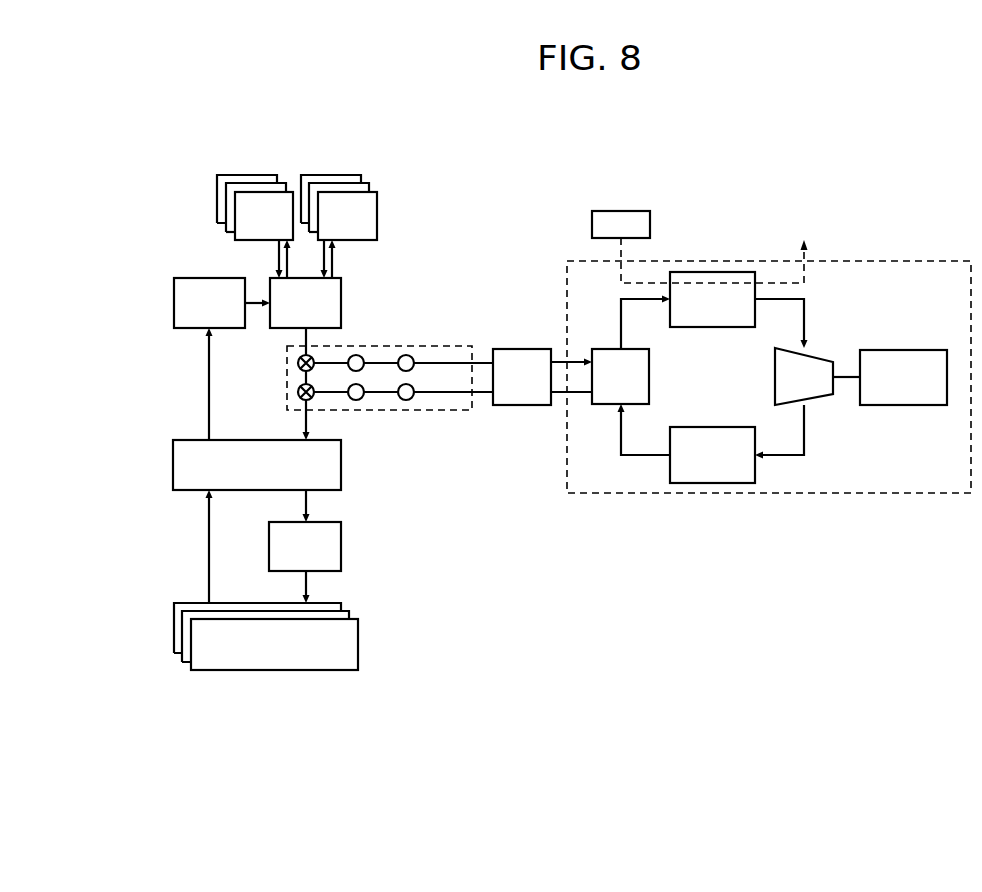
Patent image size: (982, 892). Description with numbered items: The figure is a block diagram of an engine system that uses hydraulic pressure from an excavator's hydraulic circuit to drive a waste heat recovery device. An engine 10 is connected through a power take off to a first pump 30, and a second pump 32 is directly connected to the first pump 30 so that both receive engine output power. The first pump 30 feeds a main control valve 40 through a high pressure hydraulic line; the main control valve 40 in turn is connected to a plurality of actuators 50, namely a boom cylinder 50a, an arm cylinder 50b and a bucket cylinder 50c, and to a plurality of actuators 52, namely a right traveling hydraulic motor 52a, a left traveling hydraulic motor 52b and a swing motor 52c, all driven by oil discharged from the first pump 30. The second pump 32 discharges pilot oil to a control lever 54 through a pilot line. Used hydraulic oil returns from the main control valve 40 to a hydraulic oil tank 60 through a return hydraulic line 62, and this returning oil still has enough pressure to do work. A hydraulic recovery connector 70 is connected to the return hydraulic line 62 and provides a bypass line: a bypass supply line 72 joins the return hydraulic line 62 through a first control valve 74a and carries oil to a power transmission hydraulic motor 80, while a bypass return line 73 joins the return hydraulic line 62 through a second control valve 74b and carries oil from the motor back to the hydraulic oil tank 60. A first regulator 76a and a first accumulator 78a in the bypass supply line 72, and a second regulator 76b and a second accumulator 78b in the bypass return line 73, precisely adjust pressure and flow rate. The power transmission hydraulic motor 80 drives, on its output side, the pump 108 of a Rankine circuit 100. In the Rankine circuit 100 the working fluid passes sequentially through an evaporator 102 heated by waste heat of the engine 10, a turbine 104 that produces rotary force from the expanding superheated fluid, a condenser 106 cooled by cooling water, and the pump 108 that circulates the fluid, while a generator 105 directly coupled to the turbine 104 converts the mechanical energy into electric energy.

The engine 10 is at (620, 211).
The first pump 30 is at (174, 303).
The second pump 32 is at (341, 545).
The main control valve 40 is at (341, 290).
The actuators 50 is at (158, 175).
The boom cylinder 50a is at (217, 183).
The arm cylinder 50b is at (226, 206).
The bucket cylinder 50c is at (235, 230).
The actuators 52 is at (436, 157).
The right traveling hydraulic motor 52a is at (362, 177).
The left traveling hydraulic motor 52b is at (369, 185).
The swing motor 52c is at (377, 226).
The control lever 54 is at (358, 644).
The hydraulic oil tank 60 is at (173, 463).
The return hydraulic line 62 is at (303, 418).
The hydraulic recovery connector 70 is at (472, 400).
The bypass supply line 72 is at (455, 346).
The bypass return line 73 is at (455, 410).
The first control valve 74a is at (298, 363).
The second control valve 74b is at (298, 392).
The first regulator 76a is at (358, 354).
The second regulator 76b is at (358, 401).
The first accumulator 78a is at (407, 354).
The second accumulator 78b is at (408, 401).
The power transmission hydraulic motor 80 is at (522, 349).
The Rankine circuit 100 is at (905, 261).
The evaporator 102 is at (712, 272).
The turbine 104 is at (775, 378).
The generator 105 is at (903, 350).
The condenser 106 is at (708, 483).
The pump 108 is at (649, 372).